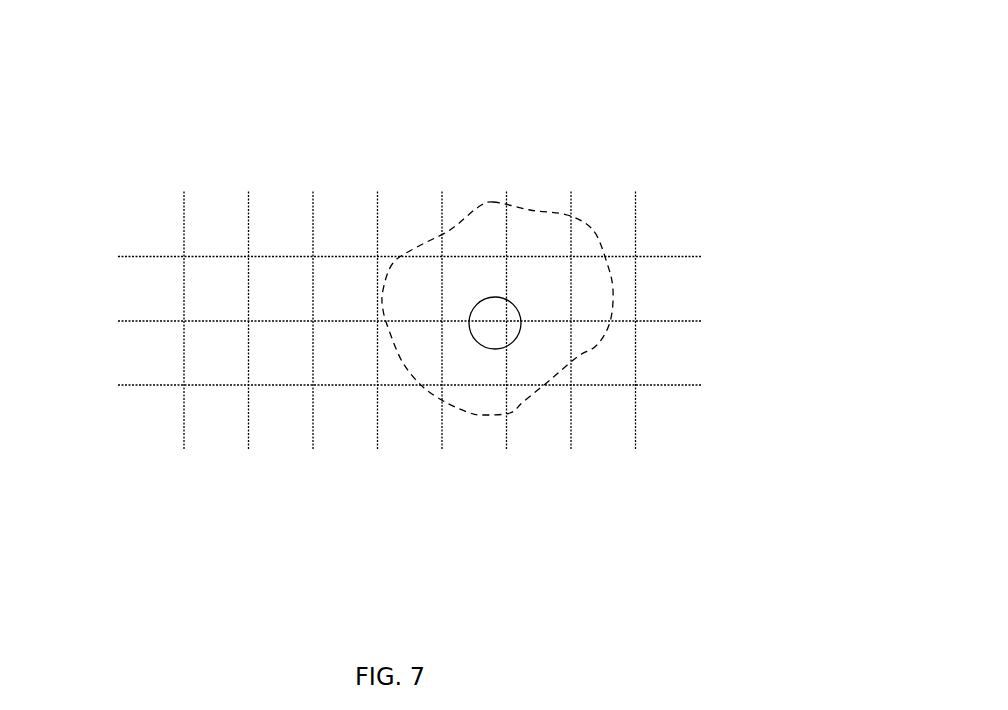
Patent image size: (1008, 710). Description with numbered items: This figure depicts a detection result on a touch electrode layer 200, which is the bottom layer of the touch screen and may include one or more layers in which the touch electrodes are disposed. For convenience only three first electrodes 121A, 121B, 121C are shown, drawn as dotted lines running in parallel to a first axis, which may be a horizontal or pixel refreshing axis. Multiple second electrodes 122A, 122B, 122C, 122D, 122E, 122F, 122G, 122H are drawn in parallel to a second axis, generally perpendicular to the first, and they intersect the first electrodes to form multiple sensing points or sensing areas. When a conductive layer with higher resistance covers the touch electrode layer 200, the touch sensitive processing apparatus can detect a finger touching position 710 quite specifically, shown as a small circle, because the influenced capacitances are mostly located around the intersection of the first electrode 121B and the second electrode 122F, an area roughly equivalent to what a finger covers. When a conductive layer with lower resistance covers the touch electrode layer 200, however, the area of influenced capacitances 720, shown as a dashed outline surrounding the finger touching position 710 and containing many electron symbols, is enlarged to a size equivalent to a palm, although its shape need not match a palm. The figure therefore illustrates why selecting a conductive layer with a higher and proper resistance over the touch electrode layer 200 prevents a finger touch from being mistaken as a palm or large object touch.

The touch electrode layer 200 is at (461, 246).
The first electrode 121A is at (142, 256).
The first electrode 121B is at (142, 320).
The first electrode 121C is at (142, 384).
The second electrode 122A is at (184, 236).
The second electrode 122B is at (248, 236).
The second electrode 122C is at (313, 236).
The second electrode 122D is at (378, 236).
The second electrode 122E is at (442, 236).
The second electrode 122F is at (506, 236).
The second electrode 122G is at (571, 236).
The second electrode 122H is at (636, 236).
The finger touching position 710 is at (495, 323).
The area of influenced capacitances 720 is at (522, 404).